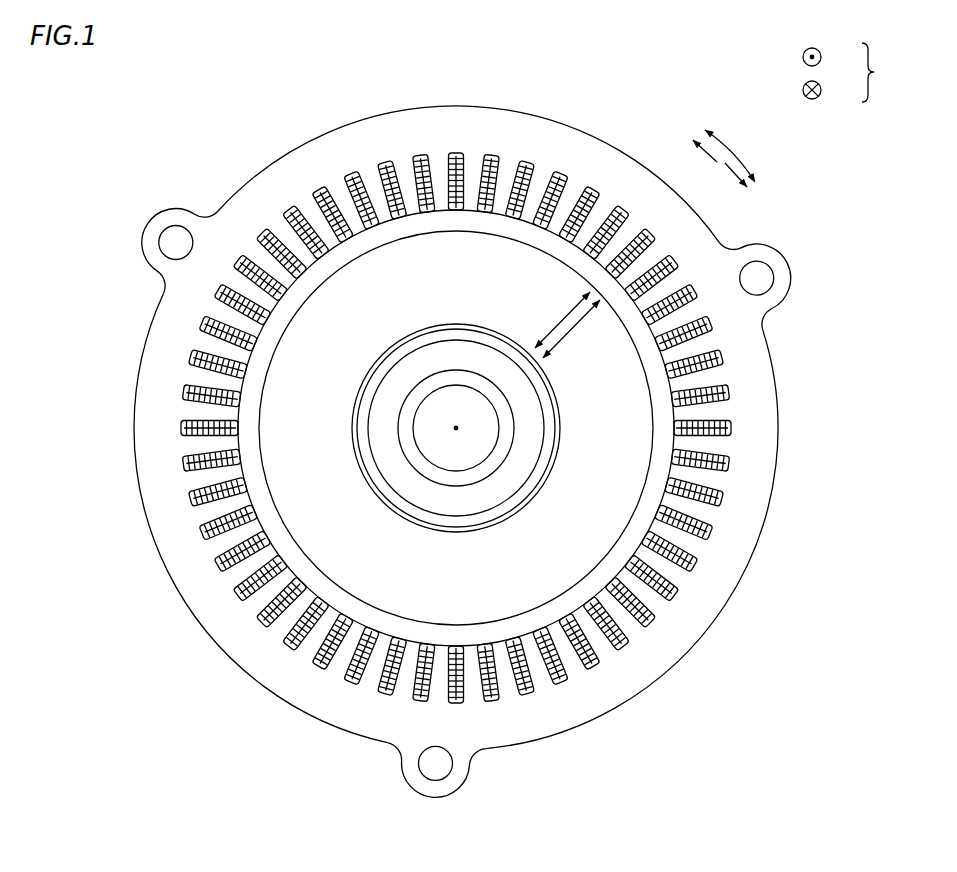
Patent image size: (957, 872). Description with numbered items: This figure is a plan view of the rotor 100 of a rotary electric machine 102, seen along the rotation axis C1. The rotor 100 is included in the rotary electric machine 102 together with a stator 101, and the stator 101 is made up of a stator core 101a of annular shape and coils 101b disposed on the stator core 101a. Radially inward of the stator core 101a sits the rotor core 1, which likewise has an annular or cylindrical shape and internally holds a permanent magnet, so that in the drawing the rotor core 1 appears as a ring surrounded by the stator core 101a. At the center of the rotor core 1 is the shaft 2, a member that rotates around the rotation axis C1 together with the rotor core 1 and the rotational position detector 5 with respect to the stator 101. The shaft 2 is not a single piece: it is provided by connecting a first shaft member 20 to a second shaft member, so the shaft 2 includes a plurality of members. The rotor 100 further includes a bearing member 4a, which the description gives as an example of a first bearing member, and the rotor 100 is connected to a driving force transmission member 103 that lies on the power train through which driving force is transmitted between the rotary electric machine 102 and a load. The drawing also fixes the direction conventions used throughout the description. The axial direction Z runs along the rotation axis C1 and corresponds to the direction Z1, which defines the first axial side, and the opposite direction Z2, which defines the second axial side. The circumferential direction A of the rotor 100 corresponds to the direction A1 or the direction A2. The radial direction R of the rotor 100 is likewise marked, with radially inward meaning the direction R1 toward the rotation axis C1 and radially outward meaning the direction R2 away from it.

The rotor core 1 is at (513, 429).
The shaft 2 is at (538, 482).
The bearing member 4a is at (375, 463).
The rotational position detector 5 is at (497, 510).
The first shaft member 20 is at (402, 408).
The rotor 100 is at (340, 262).
The stator 101 is at (460, 415).
The stator core 101a is at (415, 122).
The coils 101b is at (530, 150).
The rotary electric machine 102 is at (178, 124).
The driving force transmission member 103 is at (438, 462).
The rotation axis C1 is at (453, 422).
The radial direction R is at (571, 329).
The direction R1 is at (554, 320).
The direction R2 is at (557, 288).
The circumferential direction A is at (730, 155).
The direction A1 is at (723, 189).
The direction A2 is at (692, 161).
The direction Z is at (879, 72).
The direction Z1 is at (830, 57).
The direction Z2 is at (830, 90).